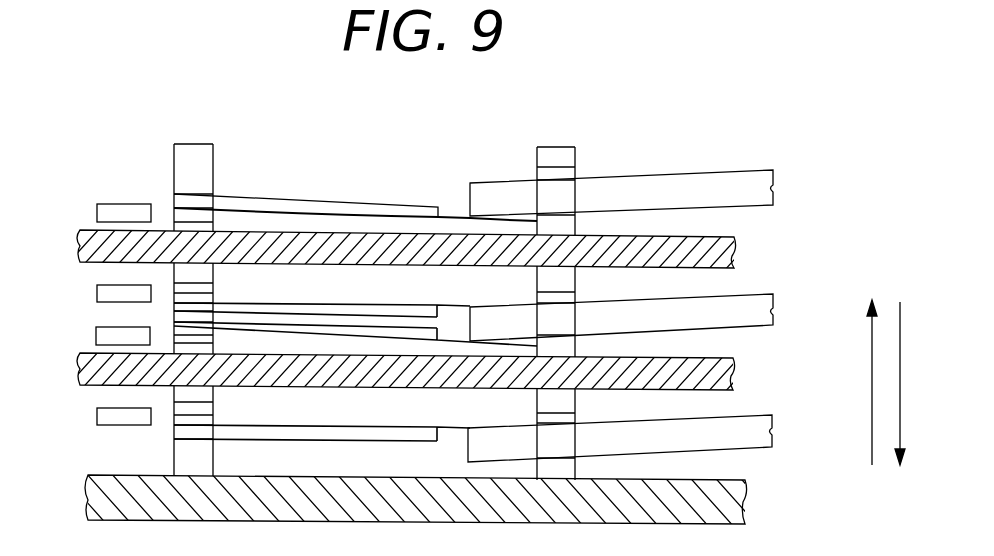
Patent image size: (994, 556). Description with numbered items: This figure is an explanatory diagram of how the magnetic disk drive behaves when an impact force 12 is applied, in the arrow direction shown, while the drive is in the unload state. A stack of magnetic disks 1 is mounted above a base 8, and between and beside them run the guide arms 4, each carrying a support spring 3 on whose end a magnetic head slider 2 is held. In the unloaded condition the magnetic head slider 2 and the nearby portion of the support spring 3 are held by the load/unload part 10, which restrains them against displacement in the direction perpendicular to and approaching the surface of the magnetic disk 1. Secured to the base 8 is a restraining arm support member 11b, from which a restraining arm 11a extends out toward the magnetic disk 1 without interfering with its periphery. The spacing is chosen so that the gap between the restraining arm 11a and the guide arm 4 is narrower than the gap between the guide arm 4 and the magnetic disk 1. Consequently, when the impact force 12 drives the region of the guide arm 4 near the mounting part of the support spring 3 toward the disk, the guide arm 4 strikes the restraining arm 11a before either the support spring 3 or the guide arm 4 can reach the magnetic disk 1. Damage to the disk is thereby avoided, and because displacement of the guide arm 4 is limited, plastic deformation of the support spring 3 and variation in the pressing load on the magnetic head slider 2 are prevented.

The magnetic disk 1 is at (85, 247).
The magnetic head slider 2 is at (100, 213).
The support spring 3 is at (300, 194).
The guide arm 4 is at (775, 188).
The base 8 is at (92, 486).
The load/unload part 10 is at (195, 155).
The restraining arm 11a is at (556, 148).
The restraining arm support member 11b is at (568, 173).
The impact force 12 is at (880, 400).